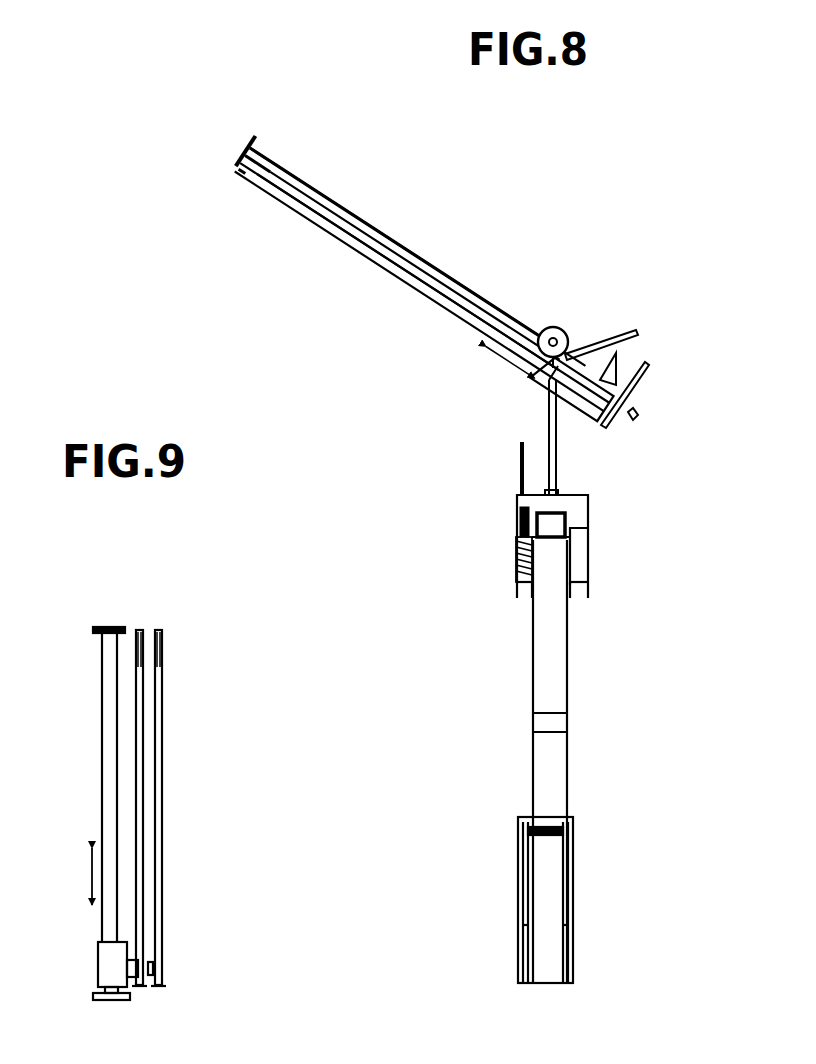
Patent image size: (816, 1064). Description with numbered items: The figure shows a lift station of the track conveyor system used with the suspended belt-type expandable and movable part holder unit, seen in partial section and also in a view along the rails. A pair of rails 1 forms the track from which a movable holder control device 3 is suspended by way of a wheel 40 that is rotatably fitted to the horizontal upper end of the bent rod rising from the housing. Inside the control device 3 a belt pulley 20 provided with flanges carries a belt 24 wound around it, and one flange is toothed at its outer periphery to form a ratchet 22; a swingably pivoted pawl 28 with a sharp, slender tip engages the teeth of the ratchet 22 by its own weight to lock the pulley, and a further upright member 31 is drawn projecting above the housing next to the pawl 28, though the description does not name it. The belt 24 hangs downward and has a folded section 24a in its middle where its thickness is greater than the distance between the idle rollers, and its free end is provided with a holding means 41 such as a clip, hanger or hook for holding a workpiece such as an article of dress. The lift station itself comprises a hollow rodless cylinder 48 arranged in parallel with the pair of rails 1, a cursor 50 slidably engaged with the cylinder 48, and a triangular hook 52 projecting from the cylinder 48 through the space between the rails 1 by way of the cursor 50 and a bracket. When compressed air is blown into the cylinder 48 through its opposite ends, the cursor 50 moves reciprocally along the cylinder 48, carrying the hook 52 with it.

In FIG. 8, the track of rails 1 is at (437, 265).
In FIG. 9, the track of rails 1 is at (162, 878).
In FIG. 8, the holder control device 3 is at (594, 545).
In FIG. 8, the belt pulley 20 is at (579, 566).
In FIG. 8, the ratchet 22 is at (515, 573).
In FIG. 8, the belt 24 is at (553, 680).
In FIG. 8, the folded section 24a is at (553, 725).
In FIG. 8, the pawl 28 is at (517, 518).
In FIG. 8, the rod 31 is at (518, 458).
In FIG. 8, the wheel 40 is at (567, 333).
In FIG. 8, the holding means 41 is at (574, 838).
In FIG. 8, the hollow rodless cylinder 48 is at (420, 286).
In FIG. 9, the hollow rodless cylinder 48 is at (108, 725).
In FIG. 8, the cursor 50 is at (597, 414).
In FIG. 9, the cursor 50 is at (105, 960).
In FIG. 8, the triangular hook 52 is at (620, 363).
In FIG. 9, the triangular hook 52 is at (153, 968).